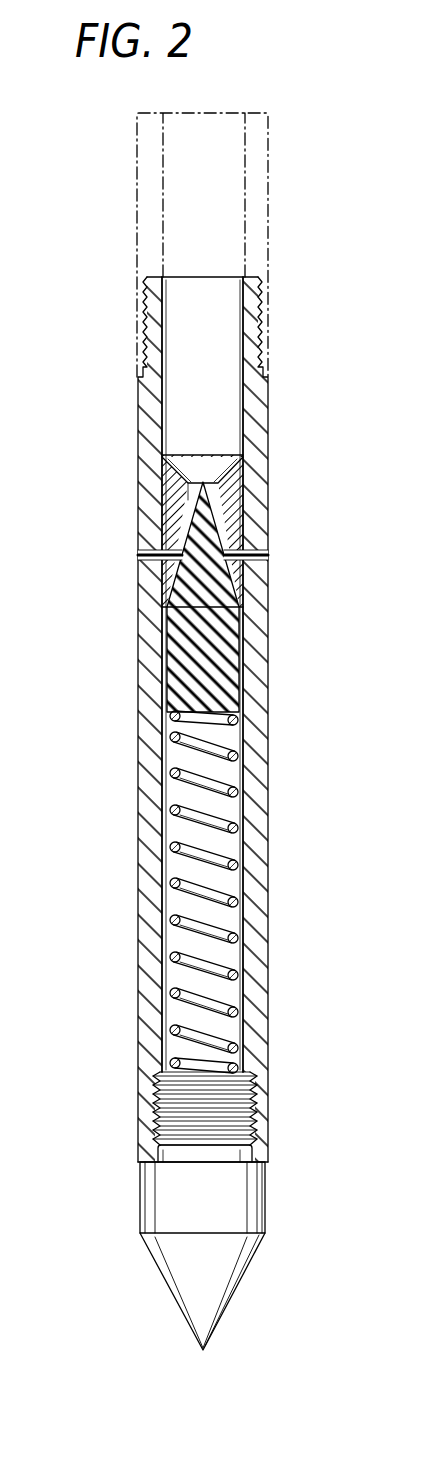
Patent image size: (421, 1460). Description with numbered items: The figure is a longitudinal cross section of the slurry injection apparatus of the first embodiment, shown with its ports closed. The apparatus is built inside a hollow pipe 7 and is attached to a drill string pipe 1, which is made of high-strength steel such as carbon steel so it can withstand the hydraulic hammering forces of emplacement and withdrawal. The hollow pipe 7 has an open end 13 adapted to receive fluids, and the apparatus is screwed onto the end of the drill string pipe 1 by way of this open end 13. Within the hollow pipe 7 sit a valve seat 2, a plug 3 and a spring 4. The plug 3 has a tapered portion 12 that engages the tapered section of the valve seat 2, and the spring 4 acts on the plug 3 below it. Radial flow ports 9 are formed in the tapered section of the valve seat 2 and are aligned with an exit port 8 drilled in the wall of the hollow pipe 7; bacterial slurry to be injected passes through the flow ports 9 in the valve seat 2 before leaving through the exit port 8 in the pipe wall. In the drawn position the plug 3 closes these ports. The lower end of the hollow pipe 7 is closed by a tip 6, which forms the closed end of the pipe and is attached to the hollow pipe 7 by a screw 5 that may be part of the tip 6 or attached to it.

The drill string pipe 1 is at (262, 201).
The valve seat 2 is at (234, 490).
The plug 3 is at (218, 665).
The spring 4 is at (217, 818).
The screw 5 is at (233, 1102).
The tip 6 is at (252, 1200).
The hollow pipe 7 is at (245, 407).
The exit port 8 is at (148, 558).
The flow port 9 is at (165, 545).
The tapered portion of the plug 12 is at (167, 520).
The open end 13 is at (213, 290).